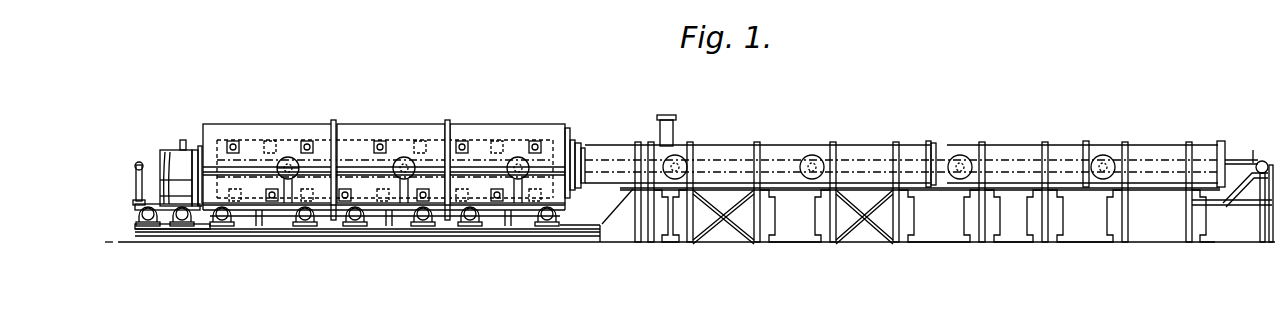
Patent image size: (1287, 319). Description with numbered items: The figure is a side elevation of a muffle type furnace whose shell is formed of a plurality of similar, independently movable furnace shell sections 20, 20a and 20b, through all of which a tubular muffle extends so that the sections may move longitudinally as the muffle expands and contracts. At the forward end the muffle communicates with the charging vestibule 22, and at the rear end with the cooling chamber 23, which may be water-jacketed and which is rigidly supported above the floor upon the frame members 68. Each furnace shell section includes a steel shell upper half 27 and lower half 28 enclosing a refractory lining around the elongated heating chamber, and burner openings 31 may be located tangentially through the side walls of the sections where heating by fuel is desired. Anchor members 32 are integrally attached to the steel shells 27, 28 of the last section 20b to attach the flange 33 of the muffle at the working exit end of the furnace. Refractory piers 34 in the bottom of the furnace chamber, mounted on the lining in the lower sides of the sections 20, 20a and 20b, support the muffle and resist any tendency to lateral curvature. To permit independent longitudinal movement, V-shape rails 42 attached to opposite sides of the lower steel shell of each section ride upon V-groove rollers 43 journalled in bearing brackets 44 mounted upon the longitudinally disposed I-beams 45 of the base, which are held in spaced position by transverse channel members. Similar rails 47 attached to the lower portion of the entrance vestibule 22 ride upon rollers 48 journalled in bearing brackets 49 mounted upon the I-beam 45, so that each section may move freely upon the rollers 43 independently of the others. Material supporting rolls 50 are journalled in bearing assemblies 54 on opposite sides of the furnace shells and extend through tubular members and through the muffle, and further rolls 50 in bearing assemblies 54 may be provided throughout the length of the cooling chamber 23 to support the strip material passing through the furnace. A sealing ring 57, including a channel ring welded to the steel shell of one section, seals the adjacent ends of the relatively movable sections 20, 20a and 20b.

The furnace shell section 20 is at (278, 123).
The furnace shell section 20a is at (381, 123).
The furnace shell section 20b is at (502, 123).
The charging vestibule 22 is at (172, 156).
The cooling chamber 23 is at (868, 144).
The steel shell upper half 27 is at (222, 131).
The steel shell lower half 28 is at (212, 196).
The burner openings 31 is at (233, 143).
The anchor members 32 is at (575, 148).
The flange 33 is at (582, 180).
The refractory piers 34 is at (280, 165).
The rails 42 is at (292, 210).
The V-groove rollers 43 is at (225, 222).
The bearing brackets 44 is at (221, 228).
The I-beams 45 is at (316, 230).
The rails 47 is at (176, 196).
The rollers 48 is at (175, 226).
The bearing brackets 49 is at (147, 230).
The material supporting rolls 50 is at (290, 158).
The bearing assemblies 54 is at (522, 158).
The sealing ring 57 is at (335, 118).
The frame members 68 is at (810, 206).